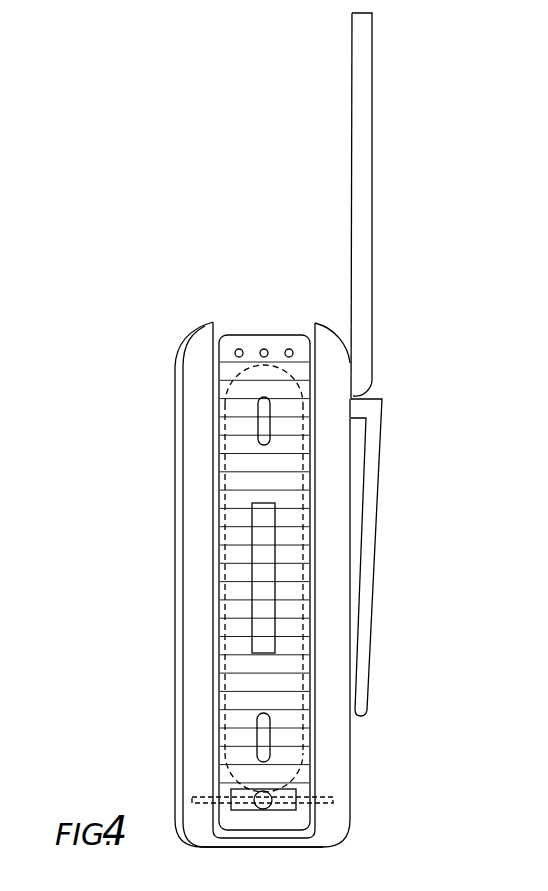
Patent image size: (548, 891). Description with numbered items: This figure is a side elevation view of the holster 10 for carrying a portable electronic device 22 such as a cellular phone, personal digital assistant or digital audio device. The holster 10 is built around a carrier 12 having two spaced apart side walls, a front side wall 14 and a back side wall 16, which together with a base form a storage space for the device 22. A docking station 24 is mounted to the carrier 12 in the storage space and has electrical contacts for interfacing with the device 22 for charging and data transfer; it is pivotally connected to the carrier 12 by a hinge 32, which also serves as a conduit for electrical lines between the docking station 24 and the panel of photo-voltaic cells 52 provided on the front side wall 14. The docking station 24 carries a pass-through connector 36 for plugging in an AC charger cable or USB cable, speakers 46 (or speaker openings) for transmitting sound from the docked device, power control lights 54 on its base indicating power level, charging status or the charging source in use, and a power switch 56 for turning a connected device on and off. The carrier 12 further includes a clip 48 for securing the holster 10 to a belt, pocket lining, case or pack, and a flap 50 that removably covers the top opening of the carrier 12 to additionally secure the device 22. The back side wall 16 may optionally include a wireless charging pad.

The holster 10 is at (418, 569).
The carrier 12 is at (337, 390).
The front side wall 14 is at (183, 468).
The back side wall 16 is at (351, 805).
The portable electronic device 22 is at (273, 366).
The docking station 24 is at (302, 608).
The hinge 32 is at (210, 798).
The pass-through connector 36 is at (263, 575).
The speakers 46 is at (260, 403).
The clip 48 is at (379, 528).
The flap 50 is at (366, 150).
The panel of photo-voltaic cells 52 is at (172, 500).
The power control lights 54 is at (238, 349).
The power switch 56 is at (287, 792).